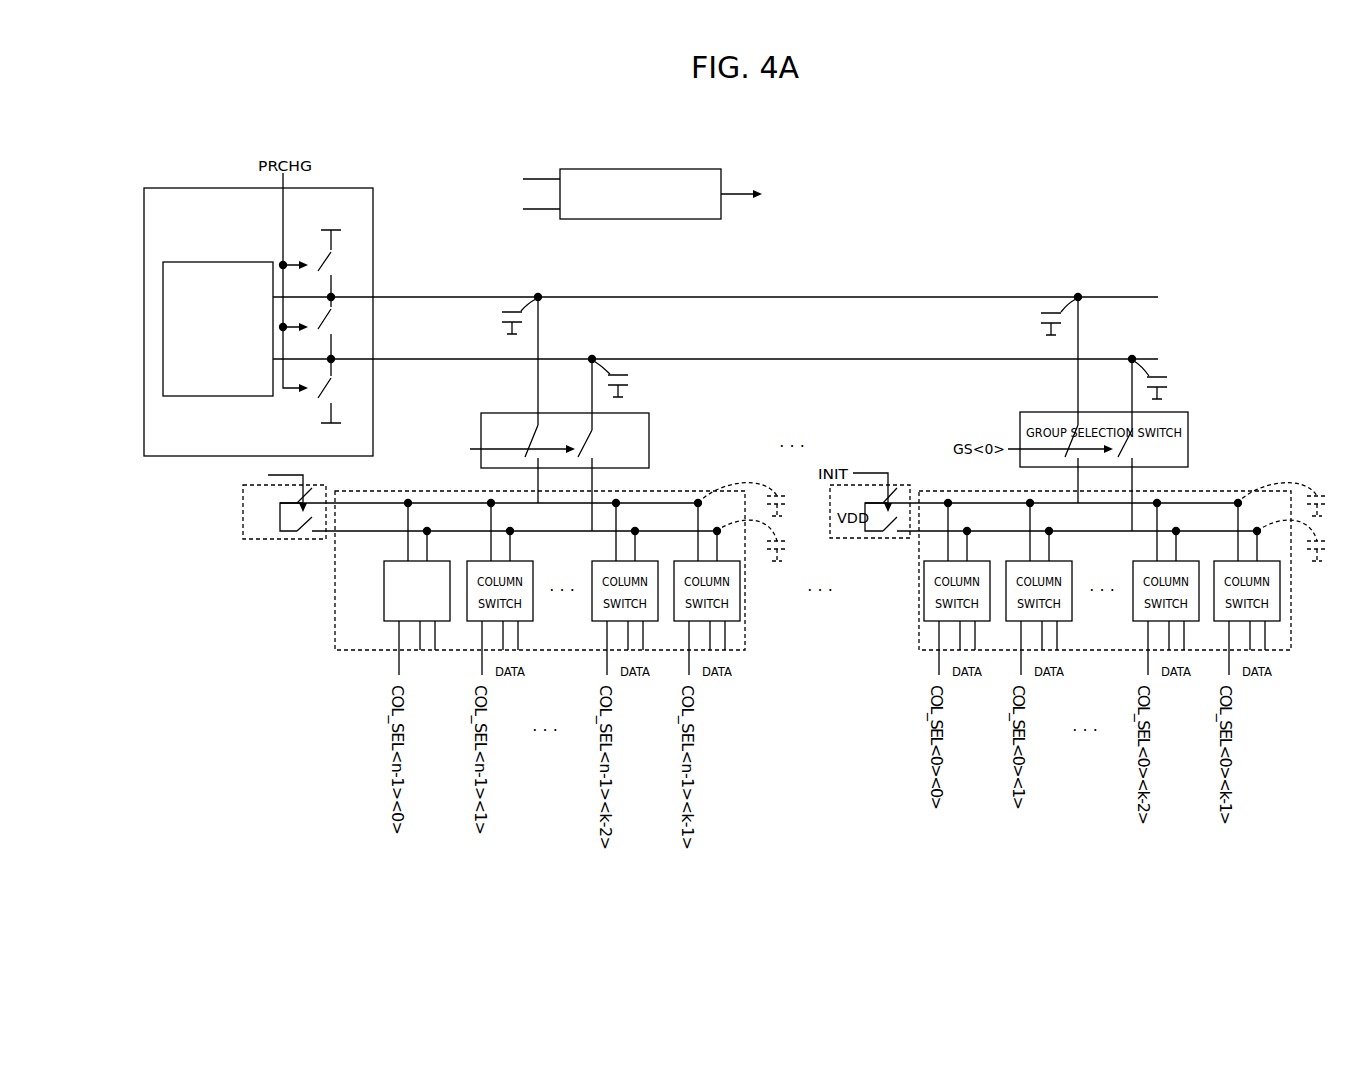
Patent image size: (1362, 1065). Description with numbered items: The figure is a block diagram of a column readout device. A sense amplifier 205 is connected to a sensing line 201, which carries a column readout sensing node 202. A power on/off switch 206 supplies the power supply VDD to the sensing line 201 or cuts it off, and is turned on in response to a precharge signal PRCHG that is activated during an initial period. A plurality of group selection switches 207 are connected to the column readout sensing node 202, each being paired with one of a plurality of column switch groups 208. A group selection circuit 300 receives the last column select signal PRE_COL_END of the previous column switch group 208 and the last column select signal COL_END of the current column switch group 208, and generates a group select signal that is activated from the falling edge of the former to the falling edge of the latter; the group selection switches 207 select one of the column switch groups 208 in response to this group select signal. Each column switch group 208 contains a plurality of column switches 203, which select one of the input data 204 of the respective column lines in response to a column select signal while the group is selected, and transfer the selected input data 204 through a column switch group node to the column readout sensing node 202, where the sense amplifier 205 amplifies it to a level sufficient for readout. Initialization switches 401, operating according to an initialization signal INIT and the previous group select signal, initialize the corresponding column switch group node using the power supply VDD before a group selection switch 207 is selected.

The sensing line 201 is at (400, 294).
The column readout sensing node 202 is at (540, 294).
The column switch 203 is at (383, 588).
The input data 204 is at (441, 636).
The sense amplifier 205 is at (219, 264).
The power on/off switch 206 is at (330, 260).
The group selection switch 207 is at (488, 412).
The column switch group 208 is at (334, 556).
The group selection circuit 300 is at (677, 168).
The initialization switch 401 is at (243, 512).